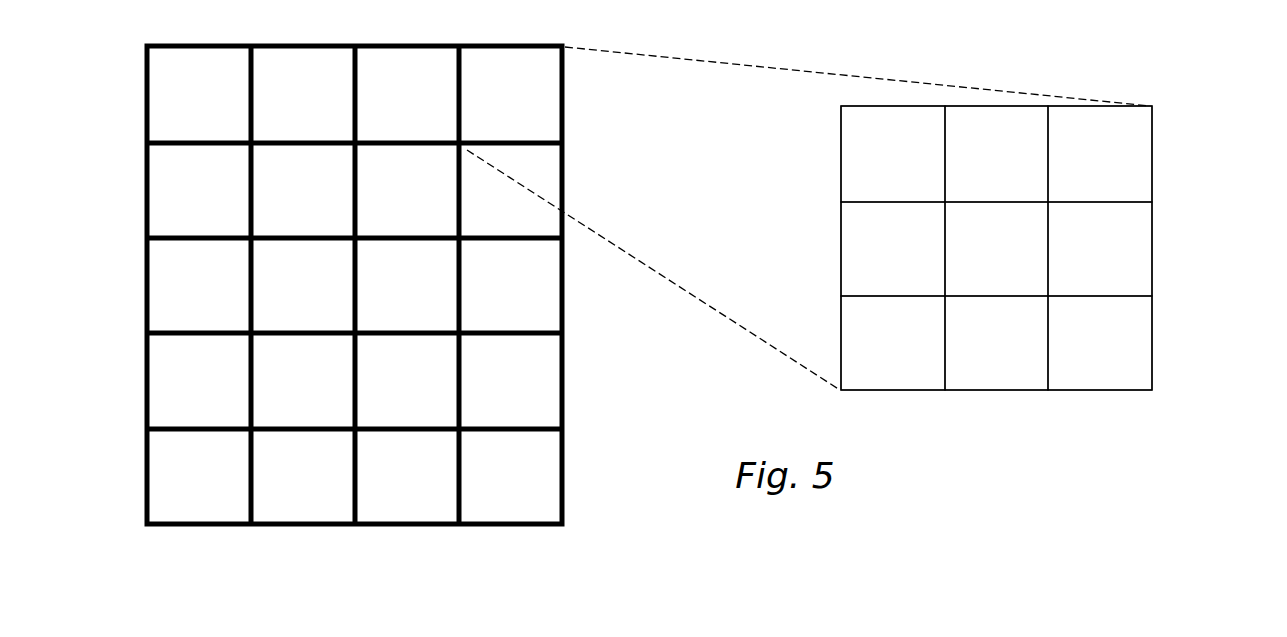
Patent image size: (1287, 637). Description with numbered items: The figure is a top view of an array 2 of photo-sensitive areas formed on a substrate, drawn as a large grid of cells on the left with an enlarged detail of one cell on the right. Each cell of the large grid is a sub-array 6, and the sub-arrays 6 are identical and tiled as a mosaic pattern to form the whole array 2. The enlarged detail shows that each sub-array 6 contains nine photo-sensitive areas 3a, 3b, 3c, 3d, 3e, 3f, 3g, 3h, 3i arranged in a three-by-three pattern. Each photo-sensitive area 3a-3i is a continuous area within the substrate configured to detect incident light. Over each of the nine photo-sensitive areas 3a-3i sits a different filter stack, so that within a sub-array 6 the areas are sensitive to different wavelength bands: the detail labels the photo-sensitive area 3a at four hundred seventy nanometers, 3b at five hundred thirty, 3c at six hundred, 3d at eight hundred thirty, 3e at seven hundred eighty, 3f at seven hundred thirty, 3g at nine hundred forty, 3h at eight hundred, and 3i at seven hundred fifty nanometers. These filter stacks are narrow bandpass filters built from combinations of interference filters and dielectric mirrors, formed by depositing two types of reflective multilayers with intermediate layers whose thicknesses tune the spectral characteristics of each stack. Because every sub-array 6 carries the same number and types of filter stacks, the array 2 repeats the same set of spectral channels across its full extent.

The array of photo-sensitive areas 2 is at (88, 57).
The sub-array 6 is at (1245, 262).
The photo-sensitive area 3a is at (893, 154).
The photo-sensitive area 3b is at (996, 154).
The photo-sensitive area 3c is at (1100, 154).
The photo-sensitive area 3d is at (893, 249).
The photo-sensitive area 3e is at (996, 249).
The photo-sensitive area 3f is at (1100, 249).
The photo-sensitive area 3g is at (893, 343).
The photo-sensitive area 3h is at (996, 343).
The photo-sensitive area 3i is at (1100, 343).